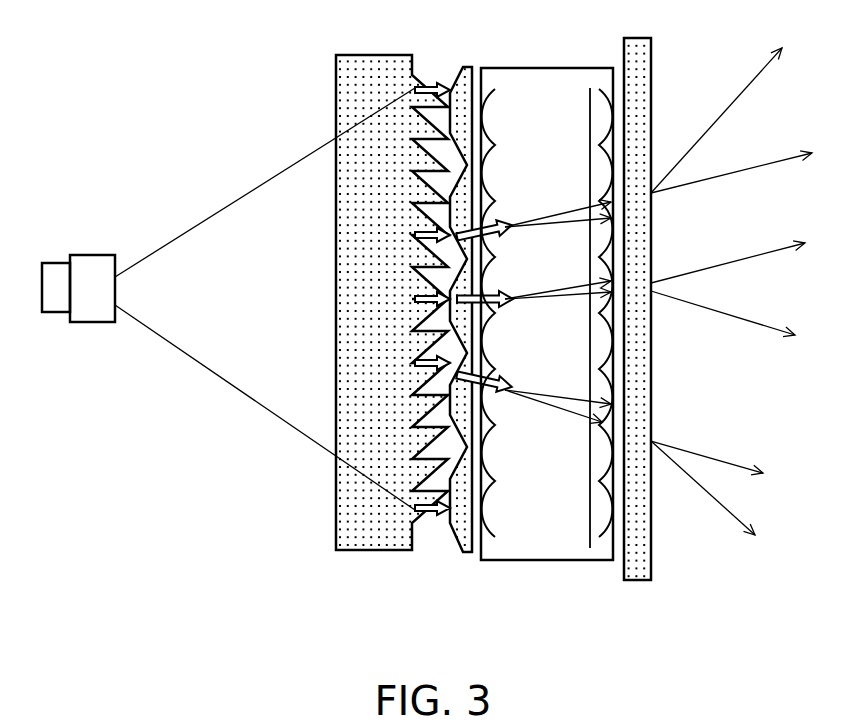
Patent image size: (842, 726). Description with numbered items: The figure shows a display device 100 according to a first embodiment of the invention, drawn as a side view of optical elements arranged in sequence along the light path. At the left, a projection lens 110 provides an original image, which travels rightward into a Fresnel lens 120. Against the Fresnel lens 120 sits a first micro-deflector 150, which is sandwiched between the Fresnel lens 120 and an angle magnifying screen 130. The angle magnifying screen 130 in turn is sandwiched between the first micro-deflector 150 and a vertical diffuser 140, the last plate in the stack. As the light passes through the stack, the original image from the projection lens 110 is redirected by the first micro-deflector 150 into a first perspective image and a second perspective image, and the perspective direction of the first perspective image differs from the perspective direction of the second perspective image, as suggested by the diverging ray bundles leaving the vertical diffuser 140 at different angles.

The display device 100 is at (100, 54).
The projection lens 110 is at (97, 307).
The Fresnel lens 120 is at (373, 553).
The angle magnifying screen 130 is at (540, 548).
The vertical diffuser 140 is at (633, 578).
The first micro-deflector 150 is at (458, 550).